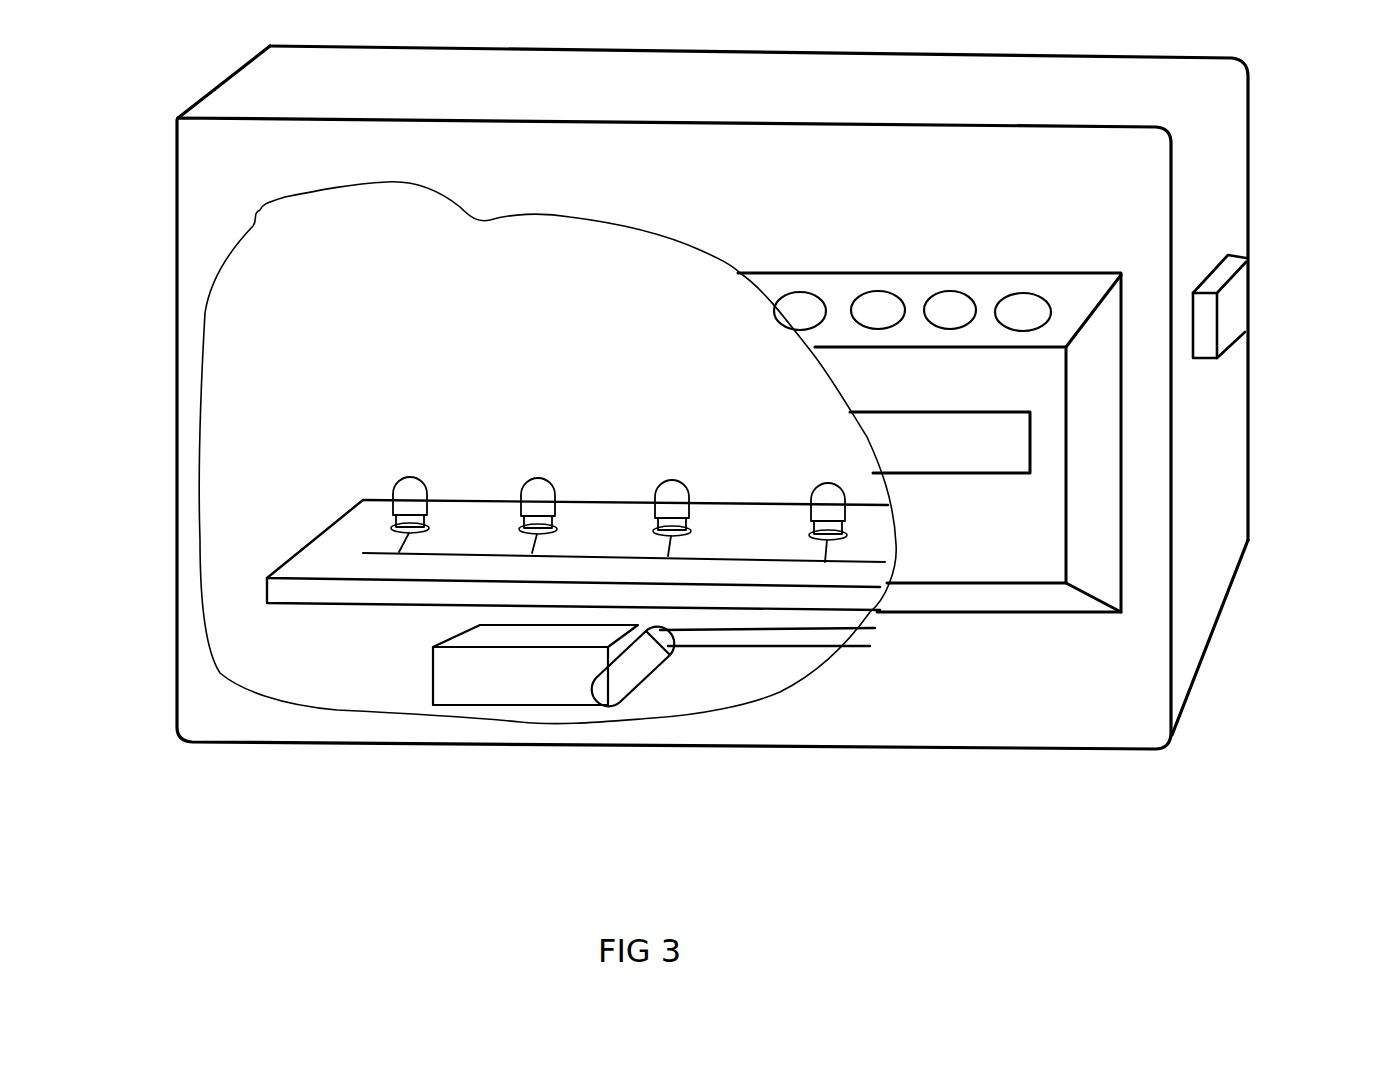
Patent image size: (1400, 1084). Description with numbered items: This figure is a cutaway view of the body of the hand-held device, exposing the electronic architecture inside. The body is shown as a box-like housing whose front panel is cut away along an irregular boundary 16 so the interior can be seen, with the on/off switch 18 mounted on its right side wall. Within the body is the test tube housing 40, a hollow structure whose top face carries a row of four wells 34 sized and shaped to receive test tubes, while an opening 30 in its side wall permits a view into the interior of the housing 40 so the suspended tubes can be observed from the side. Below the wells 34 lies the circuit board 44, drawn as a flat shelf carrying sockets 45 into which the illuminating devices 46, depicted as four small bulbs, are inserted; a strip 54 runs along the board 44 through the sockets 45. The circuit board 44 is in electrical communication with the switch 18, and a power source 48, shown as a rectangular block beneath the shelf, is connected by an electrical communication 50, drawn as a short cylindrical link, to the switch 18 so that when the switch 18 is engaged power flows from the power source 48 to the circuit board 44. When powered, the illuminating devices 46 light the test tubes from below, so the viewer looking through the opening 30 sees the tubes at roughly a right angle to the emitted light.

The housing front panel 16 is at (236, 538).
The on/off switch 18 is at (1220, 315).
The opening 30 is at (930, 452).
The wells 34 is at (1027, 320).
The test tube housing 40 is at (1087, 460).
The circuit board 44 is at (347, 543).
The sockets 45 is at (387, 523).
The illuminating device 46 is at (413, 492).
The power source 48 is at (547, 667).
The electrical communication 50 is at (630, 663).
The strip 54 is at (587, 555).